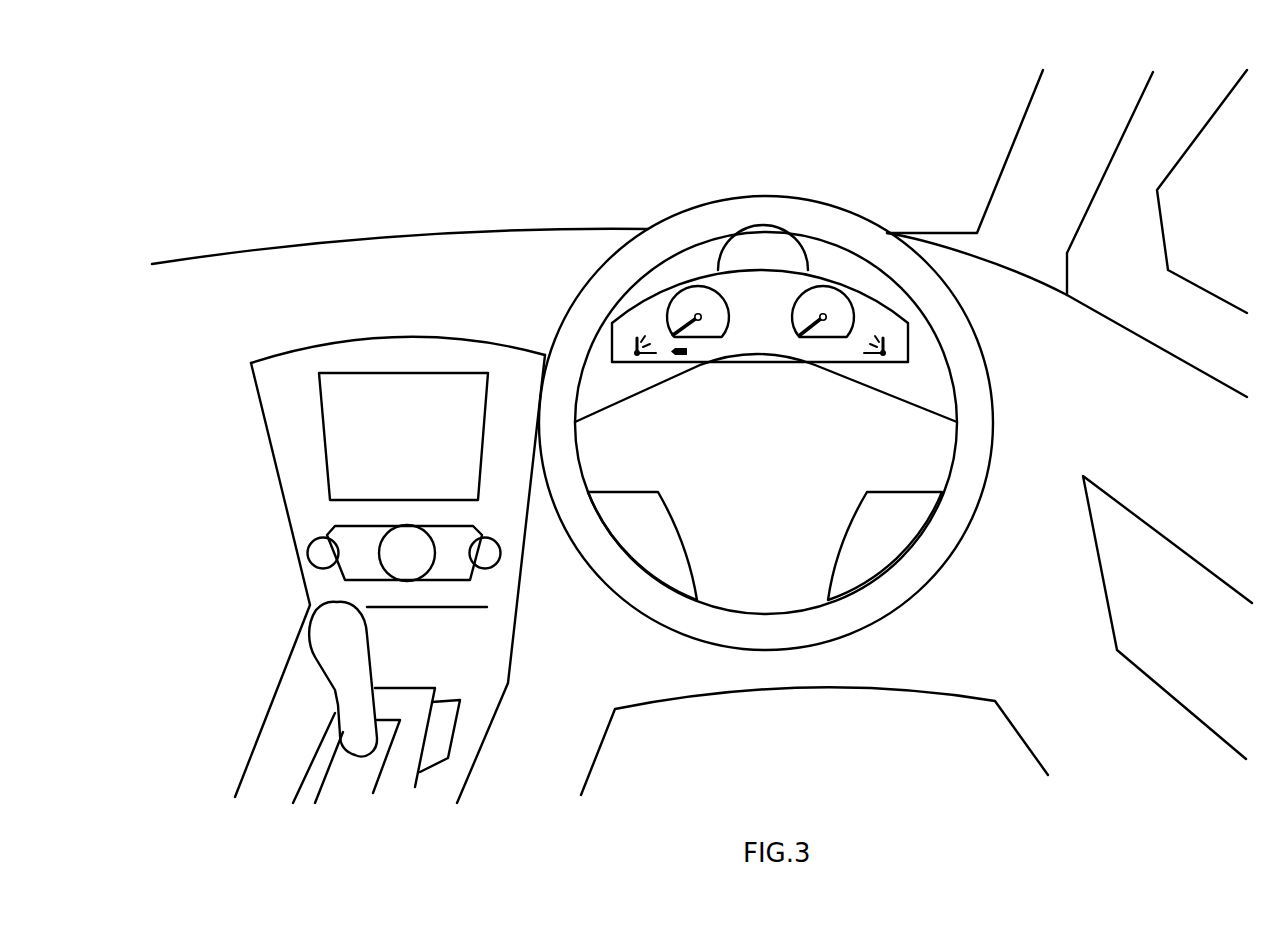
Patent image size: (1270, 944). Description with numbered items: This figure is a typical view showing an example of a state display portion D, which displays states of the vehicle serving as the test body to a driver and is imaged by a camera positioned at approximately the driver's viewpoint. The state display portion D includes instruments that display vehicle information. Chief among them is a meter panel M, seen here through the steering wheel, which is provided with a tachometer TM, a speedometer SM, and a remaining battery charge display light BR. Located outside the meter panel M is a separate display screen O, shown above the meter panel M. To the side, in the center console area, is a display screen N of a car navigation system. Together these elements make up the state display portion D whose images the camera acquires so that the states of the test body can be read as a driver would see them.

The state display portion D is at (594, 138).
The display screen O is at (760, 245).
The tachometer TM is at (698, 287).
The speedometer SM is at (823, 287).
The meter panel M is at (873, 287).
The display screen of a car navigation system N is at (403, 372).
The remaining battery charge display light BR is at (679, 357).